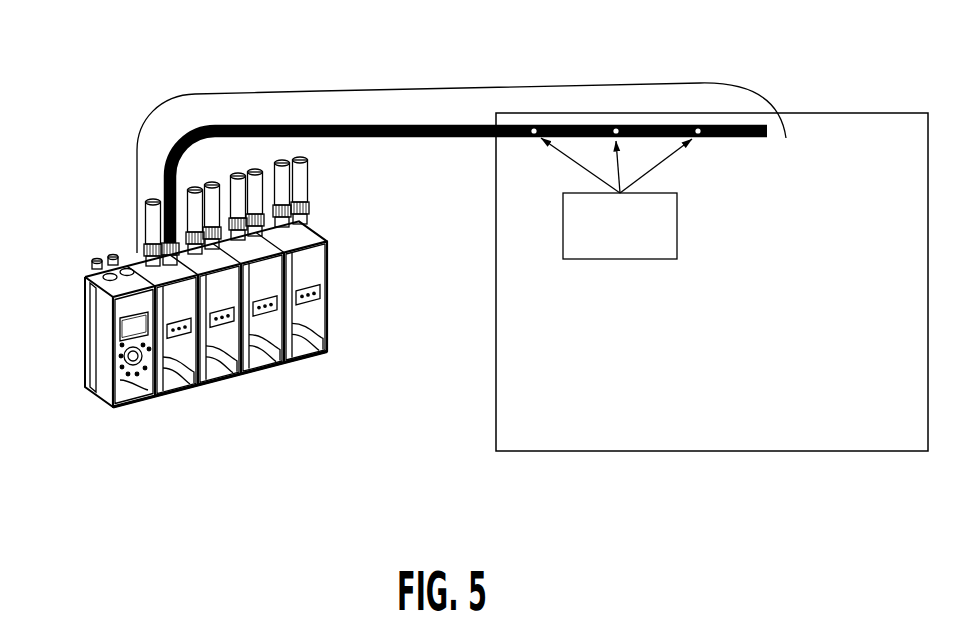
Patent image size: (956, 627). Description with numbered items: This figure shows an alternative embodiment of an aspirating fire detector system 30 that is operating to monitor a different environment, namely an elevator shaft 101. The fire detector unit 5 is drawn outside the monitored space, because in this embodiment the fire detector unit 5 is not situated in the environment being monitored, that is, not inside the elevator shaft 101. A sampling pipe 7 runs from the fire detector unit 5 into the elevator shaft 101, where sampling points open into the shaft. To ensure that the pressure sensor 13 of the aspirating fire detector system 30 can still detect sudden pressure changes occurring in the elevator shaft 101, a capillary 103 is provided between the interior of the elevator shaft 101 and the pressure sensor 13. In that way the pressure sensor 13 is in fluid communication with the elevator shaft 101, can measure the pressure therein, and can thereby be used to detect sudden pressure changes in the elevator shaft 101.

The aspirating fire detector system 30 is at (150, 72).
The pressure sensor 13 is at (13, 158).
The sampling pipe 7 is at (345, 137).
The capillary 103 is at (561, 77).
The elevator shaft 101 is at (557, 424).
The fire detector unit 5 is at (153, 395).